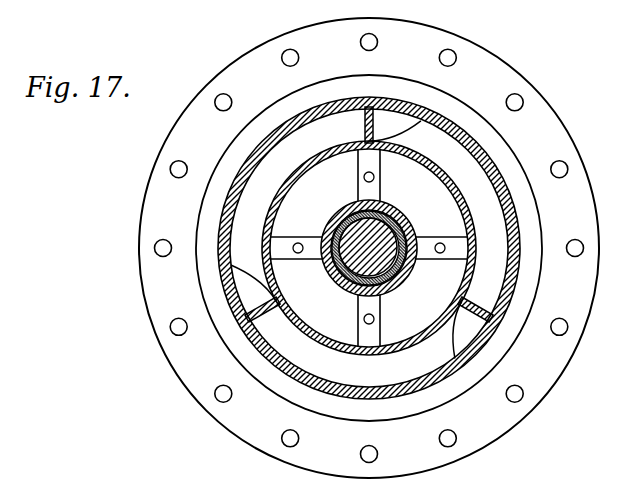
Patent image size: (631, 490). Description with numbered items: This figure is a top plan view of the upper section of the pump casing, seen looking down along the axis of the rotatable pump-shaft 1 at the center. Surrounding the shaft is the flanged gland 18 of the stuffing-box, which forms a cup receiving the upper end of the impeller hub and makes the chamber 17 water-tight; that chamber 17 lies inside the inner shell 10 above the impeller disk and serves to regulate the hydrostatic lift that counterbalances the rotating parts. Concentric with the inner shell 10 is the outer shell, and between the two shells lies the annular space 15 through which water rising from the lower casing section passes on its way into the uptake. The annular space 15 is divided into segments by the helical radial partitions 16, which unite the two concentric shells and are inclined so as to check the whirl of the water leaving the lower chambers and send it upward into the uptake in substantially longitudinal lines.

The pump-shaft 1 is at (350, 268).
The inner shell 10 is at (457, 187).
The annular space 15 is at (369, 248).
The helical radial partitions 16 is at (383, 116).
The chamber 17 is at (369, 248).
The gland 18 is at (398, 222).